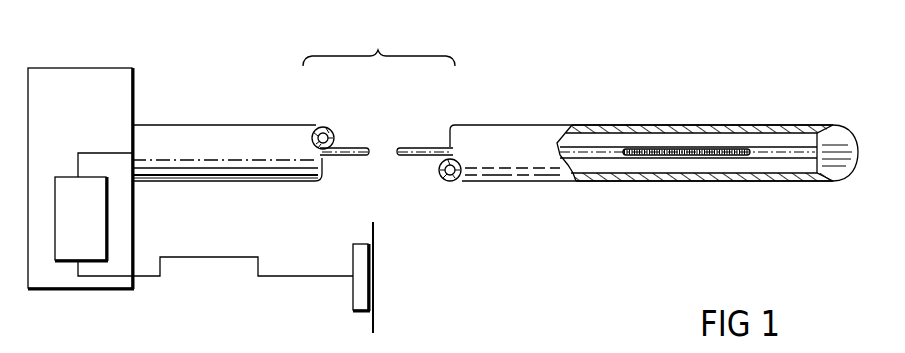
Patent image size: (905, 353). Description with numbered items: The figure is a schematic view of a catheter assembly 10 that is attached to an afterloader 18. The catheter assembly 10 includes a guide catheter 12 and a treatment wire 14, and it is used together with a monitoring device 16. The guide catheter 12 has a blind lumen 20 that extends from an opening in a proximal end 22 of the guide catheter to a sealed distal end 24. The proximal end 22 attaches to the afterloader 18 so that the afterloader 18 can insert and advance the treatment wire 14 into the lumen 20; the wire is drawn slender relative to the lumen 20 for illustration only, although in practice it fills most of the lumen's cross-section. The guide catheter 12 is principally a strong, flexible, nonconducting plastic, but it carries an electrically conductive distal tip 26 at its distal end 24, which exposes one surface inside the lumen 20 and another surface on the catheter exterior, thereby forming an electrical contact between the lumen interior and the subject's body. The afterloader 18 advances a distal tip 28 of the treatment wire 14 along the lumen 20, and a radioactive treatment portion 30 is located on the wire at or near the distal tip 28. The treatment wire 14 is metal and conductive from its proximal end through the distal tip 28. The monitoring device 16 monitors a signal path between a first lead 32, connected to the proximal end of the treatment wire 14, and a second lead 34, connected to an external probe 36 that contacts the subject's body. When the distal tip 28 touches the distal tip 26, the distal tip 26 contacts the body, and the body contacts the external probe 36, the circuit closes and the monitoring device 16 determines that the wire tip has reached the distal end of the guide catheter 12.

The catheter assembly 10 is at (587, 110).
The guide catheter 12 is at (218, 125).
The treatment wire 14 is at (357, 147).
The monitoring device 16 is at (91, 233).
The afterloader 18 is at (56, 103).
The blind lumen 20 is at (778, 138).
The proximal end 22 is at (134, 181).
The sealed distal end 24 is at (815, 130).
The distal tip 26 is at (847, 148).
The distal tip 28 is at (750, 156).
The radioactive treatment portion 30 is at (667, 148).
The first lead 32 is at (108, 152).
The second lead 34 is at (106, 278).
The external probe 36 is at (358, 296).